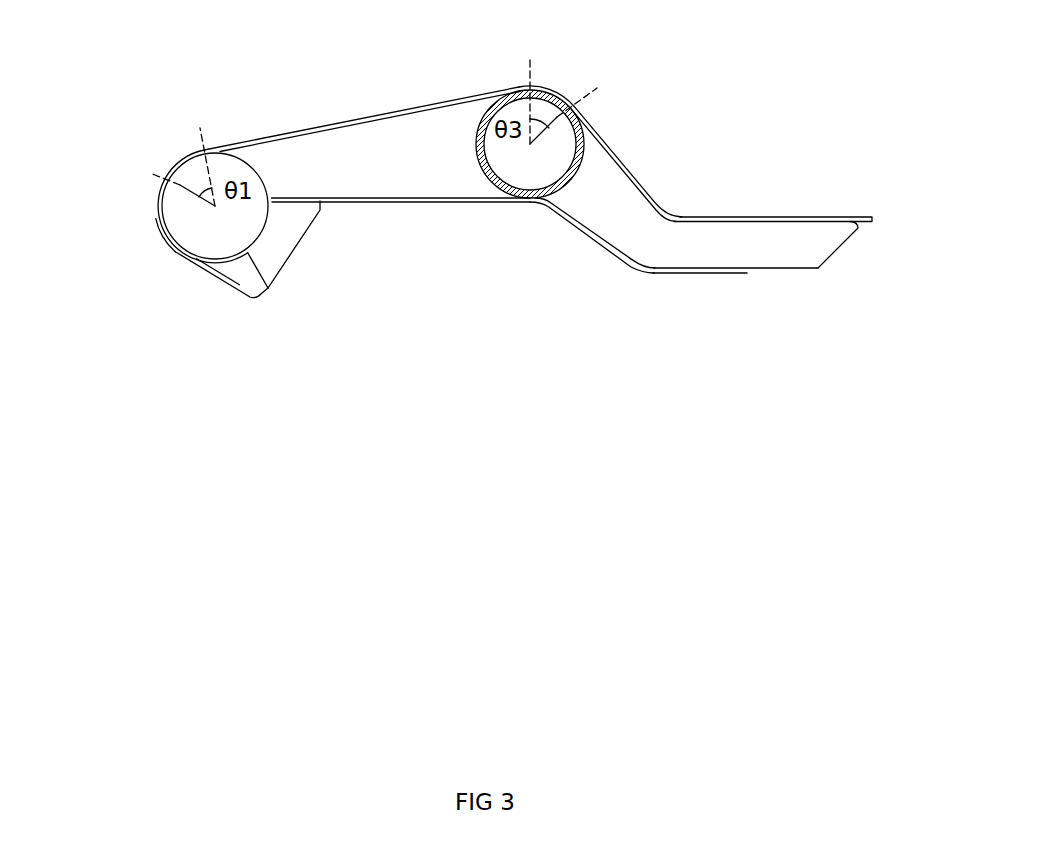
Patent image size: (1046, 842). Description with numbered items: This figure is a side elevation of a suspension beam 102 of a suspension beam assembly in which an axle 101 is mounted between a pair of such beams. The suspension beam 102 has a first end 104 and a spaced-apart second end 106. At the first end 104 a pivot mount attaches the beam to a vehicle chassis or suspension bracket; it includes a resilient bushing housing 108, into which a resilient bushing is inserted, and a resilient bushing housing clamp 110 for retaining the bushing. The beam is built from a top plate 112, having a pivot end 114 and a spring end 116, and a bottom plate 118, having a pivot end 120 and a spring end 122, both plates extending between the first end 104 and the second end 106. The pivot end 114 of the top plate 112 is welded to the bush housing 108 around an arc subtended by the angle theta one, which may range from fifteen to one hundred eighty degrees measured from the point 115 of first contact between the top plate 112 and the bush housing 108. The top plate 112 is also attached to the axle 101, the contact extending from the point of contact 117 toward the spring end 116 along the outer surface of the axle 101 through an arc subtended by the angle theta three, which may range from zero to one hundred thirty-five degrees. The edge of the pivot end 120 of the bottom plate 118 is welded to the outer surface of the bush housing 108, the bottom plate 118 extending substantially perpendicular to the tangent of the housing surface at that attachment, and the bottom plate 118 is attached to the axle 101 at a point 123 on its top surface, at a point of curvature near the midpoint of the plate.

The axle 101 is at (584, 163).
The suspension beam 102 is at (533, 265).
The first end 104 is at (148, 192).
The second end 106 is at (861, 254).
The resilient bushing housing 108 is at (175, 257).
The resilient bushing housing clamp 110 is at (270, 293).
The top plate 112 is at (450, 92).
The pivot end of top plate 114 is at (184, 152).
The point of first attachment 115 is at (204, 135).
The spring end of top plate 116 is at (789, 217).
The point of contact 117 is at (532, 58).
The bottom plate 118 is at (416, 207).
The pivot end of bottom plate 120 is at (272, 204).
The spring end of bottom plate 122 is at (722, 273).
The attachment point 123 is at (522, 204).